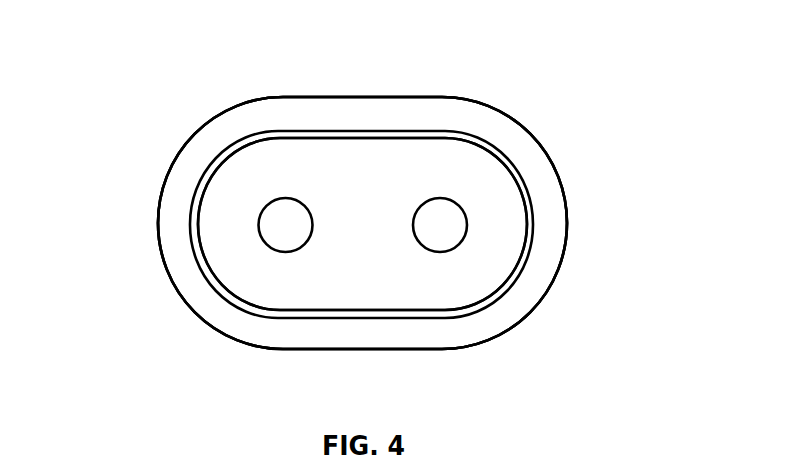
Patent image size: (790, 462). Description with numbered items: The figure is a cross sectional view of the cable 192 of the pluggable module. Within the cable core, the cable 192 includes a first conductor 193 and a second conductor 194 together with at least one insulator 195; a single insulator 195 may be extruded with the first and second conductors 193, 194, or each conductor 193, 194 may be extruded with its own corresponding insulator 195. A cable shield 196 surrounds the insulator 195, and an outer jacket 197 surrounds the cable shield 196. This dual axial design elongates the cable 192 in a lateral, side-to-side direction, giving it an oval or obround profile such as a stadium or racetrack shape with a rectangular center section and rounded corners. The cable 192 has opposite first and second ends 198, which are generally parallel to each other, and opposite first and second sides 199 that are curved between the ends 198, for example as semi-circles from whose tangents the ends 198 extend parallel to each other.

The cable 192 is at (430, 62).
The first conductor 193 is at (440, 224).
The second conductor 194 is at (286, 224).
The insulator 195 is at (328, 162).
The cable shield 196 is at (520, 267).
The outer jacket 197 is at (512, 307).
The ends 198 is at (362, 98).
The sides 199 is at (158, 222).